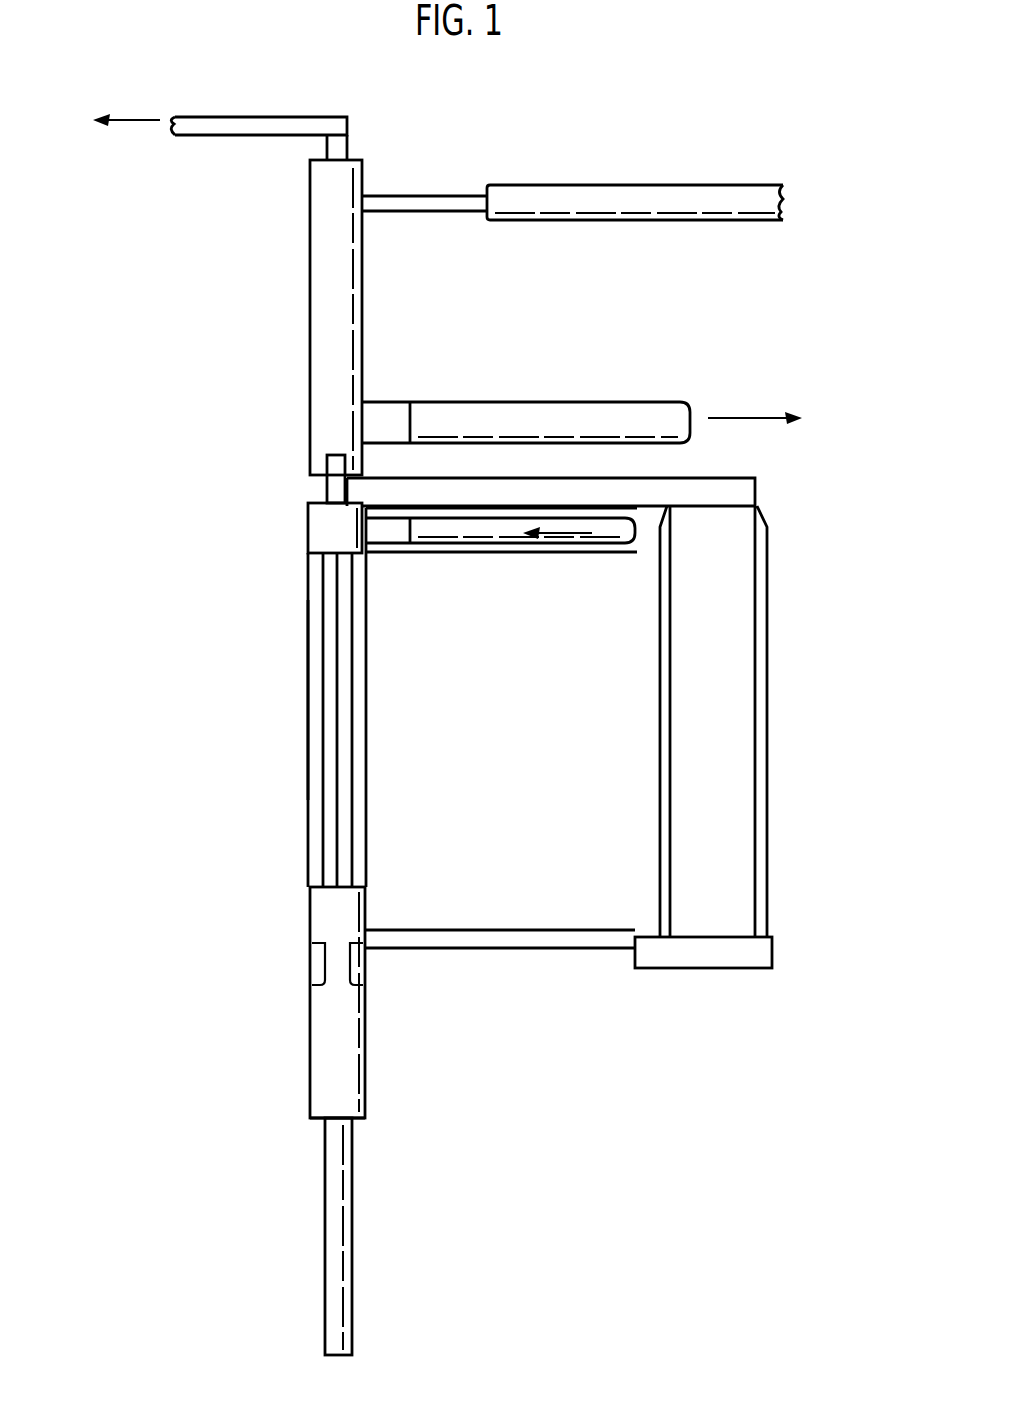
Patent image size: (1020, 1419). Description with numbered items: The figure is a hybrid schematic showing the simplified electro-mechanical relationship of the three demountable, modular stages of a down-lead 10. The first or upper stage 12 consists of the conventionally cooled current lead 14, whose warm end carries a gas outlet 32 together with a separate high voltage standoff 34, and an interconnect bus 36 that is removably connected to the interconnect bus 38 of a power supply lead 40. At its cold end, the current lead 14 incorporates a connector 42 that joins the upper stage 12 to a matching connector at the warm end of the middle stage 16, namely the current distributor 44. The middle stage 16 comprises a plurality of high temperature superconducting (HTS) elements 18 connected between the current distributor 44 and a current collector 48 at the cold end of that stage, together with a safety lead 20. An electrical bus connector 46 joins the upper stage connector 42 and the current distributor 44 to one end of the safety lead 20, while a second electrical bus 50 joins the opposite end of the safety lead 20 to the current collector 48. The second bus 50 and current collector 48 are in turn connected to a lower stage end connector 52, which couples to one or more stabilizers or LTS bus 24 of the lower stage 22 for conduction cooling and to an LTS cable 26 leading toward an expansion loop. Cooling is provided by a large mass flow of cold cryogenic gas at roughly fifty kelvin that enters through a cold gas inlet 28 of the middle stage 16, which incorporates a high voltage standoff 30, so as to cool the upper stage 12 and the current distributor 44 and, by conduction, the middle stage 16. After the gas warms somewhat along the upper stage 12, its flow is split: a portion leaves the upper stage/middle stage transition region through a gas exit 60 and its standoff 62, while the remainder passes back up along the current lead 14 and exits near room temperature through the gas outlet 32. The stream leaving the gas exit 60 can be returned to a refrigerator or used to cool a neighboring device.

The down-lead 10 is at (222, 591).
The upper stage 12 is at (298, 285).
The current lead 14 is at (352, 302).
The middle stage 16 is at (290, 753).
The HTS elements 18 is at (308, 670).
The safety lead 20 is at (765, 660).
The lower stage 22 is at (388, 1057).
The LTS bus 24 is at (310, 1108).
The LTS cable 26 is at (342, 1267).
The cold gas inlet 28 is at (517, 553).
The high voltage standoff 30 is at (390, 541).
The gas outlet 32 is at (222, 122).
The high voltage standoff 34 is at (340, 147).
The interconnect bus 36 is at (403, 198).
The interconnect bus 38 is at (528, 198).
The power supply lead 40 is at (723, 198).
The connector 42 is at (312, 467).
The current distributor 44 is at (320, 528).
The electrical bus connector 46 is at (693, 478).
The current collector 48 is at (317, 910).
The second electrical bus 50 is at (468, 932).
The lower stage end connector 52 is at (313, 958).
The gas exit 60 is at (530, 403).
The standoff 62 is at (382, 412).